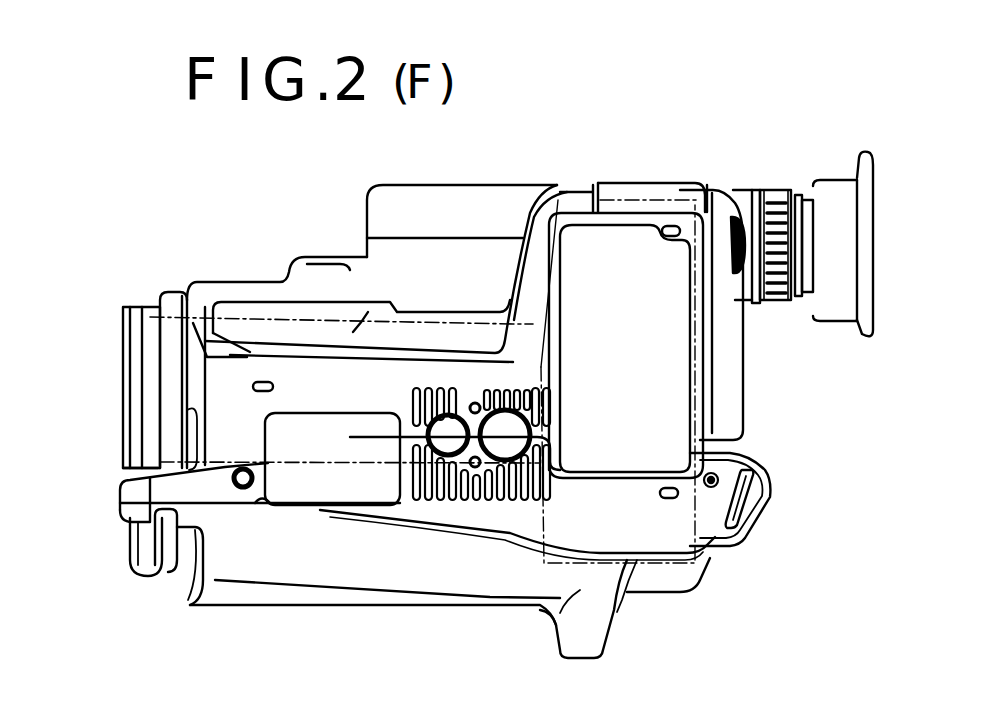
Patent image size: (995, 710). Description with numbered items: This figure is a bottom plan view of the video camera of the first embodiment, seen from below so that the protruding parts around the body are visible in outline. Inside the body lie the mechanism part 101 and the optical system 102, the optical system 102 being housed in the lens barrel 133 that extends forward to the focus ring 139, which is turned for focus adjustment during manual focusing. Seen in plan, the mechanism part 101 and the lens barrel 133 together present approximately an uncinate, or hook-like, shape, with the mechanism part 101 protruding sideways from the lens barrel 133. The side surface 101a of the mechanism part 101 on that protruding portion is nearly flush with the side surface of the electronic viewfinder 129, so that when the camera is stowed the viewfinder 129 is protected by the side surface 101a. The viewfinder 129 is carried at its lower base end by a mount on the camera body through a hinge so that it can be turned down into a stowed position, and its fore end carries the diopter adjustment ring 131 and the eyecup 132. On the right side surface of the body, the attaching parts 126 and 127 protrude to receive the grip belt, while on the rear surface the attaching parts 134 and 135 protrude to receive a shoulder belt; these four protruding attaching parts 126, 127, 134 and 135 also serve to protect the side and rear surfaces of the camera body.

The mechanism part 101 is at (672, 352).
The side surface 101a is at (641, 183).
The optical system 102 is at (170, 415).
The attaching part 126 is at (138, 562).
The attaching part 127 is at (590, 628).
The electronic viewfinder 129 is at (494, 207).
The diopter adjustment ring 131 is at (774, 200).
The eyecup 132 is at (832, 198).
The lens barrel 133 is at (236, 292).
The attaching part 134 is at (773, 489).
The attaching part 135 is at (750, 518).
The focus ring 139 is at (150, 307).